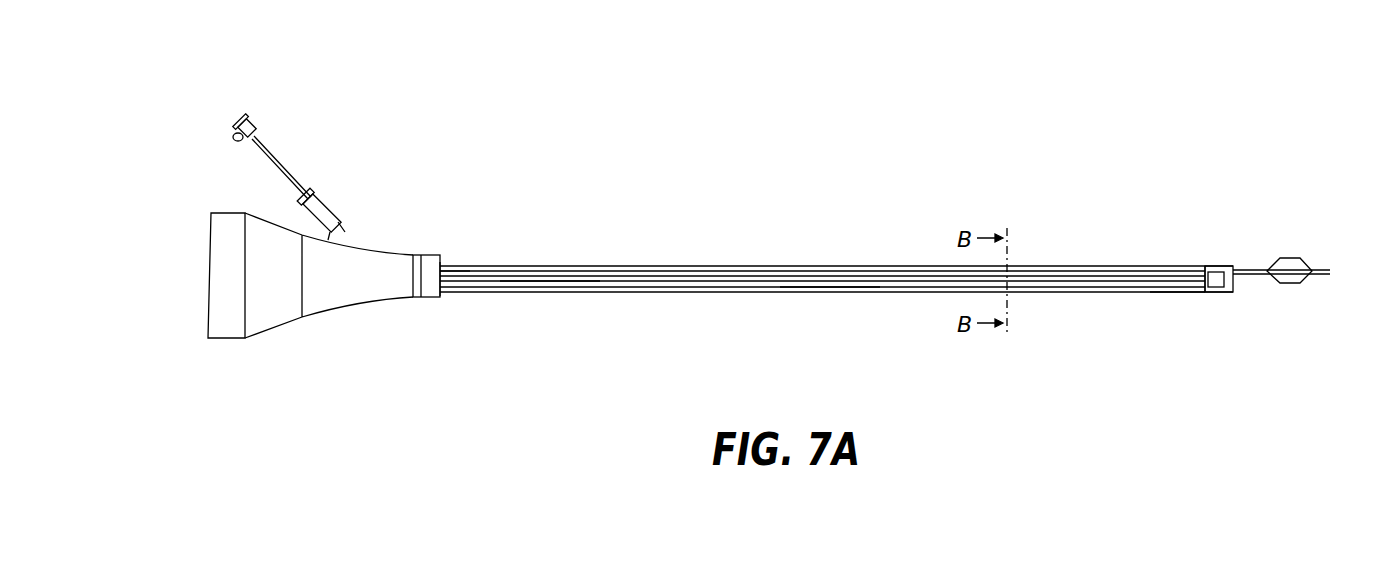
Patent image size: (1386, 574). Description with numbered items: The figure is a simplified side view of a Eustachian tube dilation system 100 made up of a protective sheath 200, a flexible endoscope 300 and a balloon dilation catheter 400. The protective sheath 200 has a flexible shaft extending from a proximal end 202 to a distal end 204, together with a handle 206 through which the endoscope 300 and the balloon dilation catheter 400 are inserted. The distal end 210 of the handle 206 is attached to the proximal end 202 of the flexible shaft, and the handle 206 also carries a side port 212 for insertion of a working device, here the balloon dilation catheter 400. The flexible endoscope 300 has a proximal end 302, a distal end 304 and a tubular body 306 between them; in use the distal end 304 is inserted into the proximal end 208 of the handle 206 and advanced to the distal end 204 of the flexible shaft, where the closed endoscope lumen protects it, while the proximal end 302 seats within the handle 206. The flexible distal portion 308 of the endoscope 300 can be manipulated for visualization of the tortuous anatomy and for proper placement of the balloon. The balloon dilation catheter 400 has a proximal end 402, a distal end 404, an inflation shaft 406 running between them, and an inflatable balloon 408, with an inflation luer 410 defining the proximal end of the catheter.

The Eustachian tube dilation system 100 is at (826, 150).
The protective sheath 200 is at (640, 256).
The proximal end of the flexible shaft 202 is at (440, 298).
The distal end of the flexible shaft 204 is at (1228, 293).
The handle 206 is at (332, 319).
The proximal end of the handle 208 is at (210, 330).
The distal end of the handle 210 is at (441, 267).
The side port 212 is at (333, 210).
The flexible endoscope 300 is at (548, 282).
The proximal end of the endoscope 302 is at (445, 271).
The distal end of the endoscope 304 is at (1202, 266).
The tubular body 306 is at (835, 283).
The flexible distal portion of the endoscope 308 is at (1183, 292).
The balloon dilation catheter 400 is at (1293, 240).
The proximal end of the balloon dilation catheter 402 is at (238, 122).
The distal end of the balloon dilation catheter 404 is at (1330, 276).
The inflation shaft 406 is at (276, 152).
The inflatable balloon 408 is at (1290, 284).
The inflation luer 410 is at (252, 118).